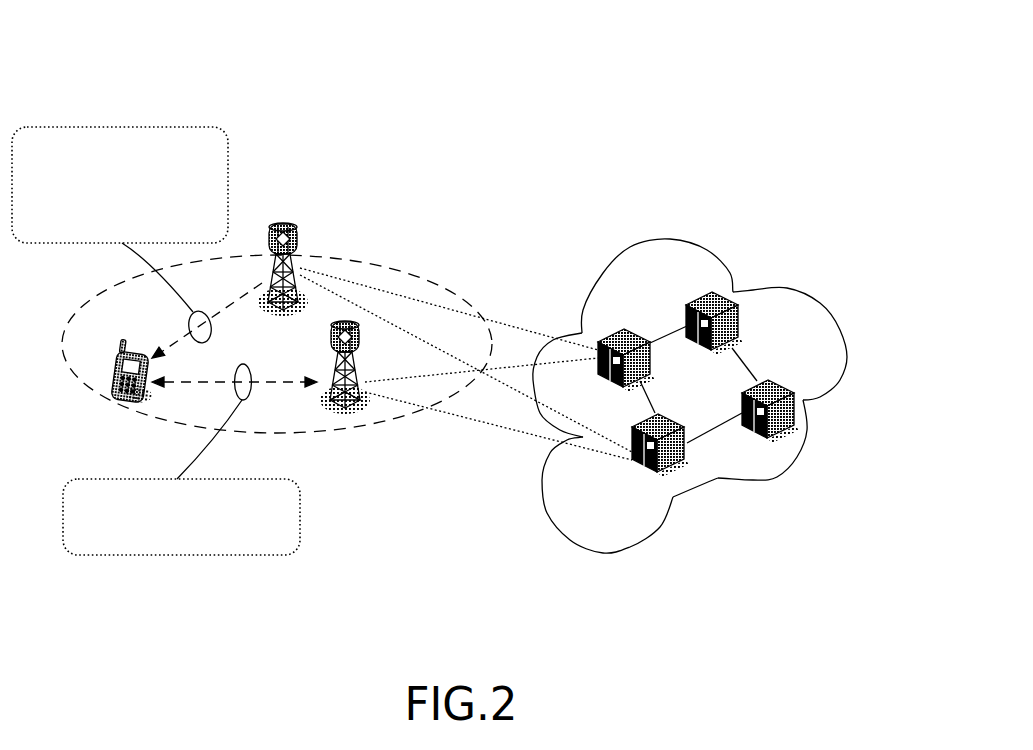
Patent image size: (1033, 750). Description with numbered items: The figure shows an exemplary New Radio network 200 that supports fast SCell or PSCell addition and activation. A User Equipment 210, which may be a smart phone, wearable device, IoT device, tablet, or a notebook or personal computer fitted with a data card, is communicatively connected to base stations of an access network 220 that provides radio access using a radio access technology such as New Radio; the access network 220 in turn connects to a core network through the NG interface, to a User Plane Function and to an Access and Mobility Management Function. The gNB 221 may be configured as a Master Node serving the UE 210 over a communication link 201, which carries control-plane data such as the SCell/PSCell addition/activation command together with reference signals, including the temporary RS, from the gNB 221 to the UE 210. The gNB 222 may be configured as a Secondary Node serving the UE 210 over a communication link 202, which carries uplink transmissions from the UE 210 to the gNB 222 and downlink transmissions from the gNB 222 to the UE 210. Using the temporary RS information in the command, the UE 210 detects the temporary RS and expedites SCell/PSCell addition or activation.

The 5G New Radio (NR) network 200 is at (849, 70).
The communication link 201 is at (106, 228).
The communication link 202 is at (166, 515).
The User Equipment (UE) 210 is at (117, 343).
The access network 220 is at (434, 276).
The gNB 221 is at (284, 222).
The gNB 222 is at (360, 330).